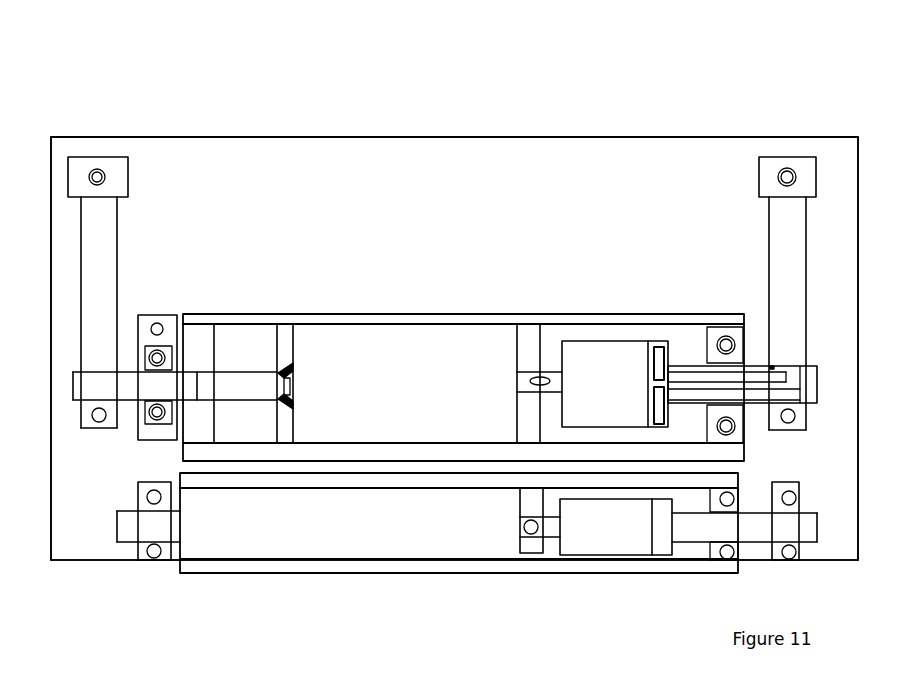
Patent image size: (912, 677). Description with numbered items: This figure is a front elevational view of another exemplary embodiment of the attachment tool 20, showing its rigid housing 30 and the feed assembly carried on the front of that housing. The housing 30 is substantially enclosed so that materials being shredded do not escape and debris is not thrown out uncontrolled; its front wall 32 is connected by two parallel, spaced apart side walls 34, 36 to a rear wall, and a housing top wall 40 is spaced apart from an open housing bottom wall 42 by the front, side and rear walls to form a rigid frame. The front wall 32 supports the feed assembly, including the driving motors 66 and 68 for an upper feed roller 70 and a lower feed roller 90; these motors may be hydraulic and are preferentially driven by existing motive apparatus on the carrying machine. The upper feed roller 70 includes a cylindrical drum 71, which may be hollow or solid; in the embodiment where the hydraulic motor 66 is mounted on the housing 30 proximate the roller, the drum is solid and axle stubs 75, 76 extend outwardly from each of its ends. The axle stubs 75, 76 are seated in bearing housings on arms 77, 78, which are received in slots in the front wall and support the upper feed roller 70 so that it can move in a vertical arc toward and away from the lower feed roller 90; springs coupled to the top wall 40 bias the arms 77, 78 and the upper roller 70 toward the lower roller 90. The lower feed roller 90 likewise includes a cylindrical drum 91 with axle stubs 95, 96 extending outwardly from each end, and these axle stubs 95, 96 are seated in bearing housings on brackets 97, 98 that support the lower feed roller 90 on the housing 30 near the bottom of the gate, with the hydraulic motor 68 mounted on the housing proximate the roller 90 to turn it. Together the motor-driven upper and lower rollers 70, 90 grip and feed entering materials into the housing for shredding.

The attachment tool 20 is at (144, 18).
The rigid housing 30 is at (444, 99).
The front wall 32 is at (251, 155).
The side wall 34 is at (858, 170).
The side wall 36 is at (52, 148).
The housing top wall 40 is at (748, 137).
The open housing bottom wall 42 is at (803, 560).
The hydraulic motor 66 is at (625, 367).
The hydraulic motor 68 is at (610, 533).
The upper feed roller 70 is at (469, 302).
The cylindrical drum 71 is at (500, 383).
The axle stub 75 is at (250, 385).
The axle stub 76 is at (817, 372).
The arm 77 is at (106, 220).
The arm 78 is at (795, 270).
The lower feed roller 90 is at (372, 587).
The cylindrical drum 91 is at (456, 548).
The axle stub 95 is at (127, 537).
The axle stub 96 is at (752, 533).
The bracket 97 is at (140, 498).
The bracket 98 is at (797, 507).